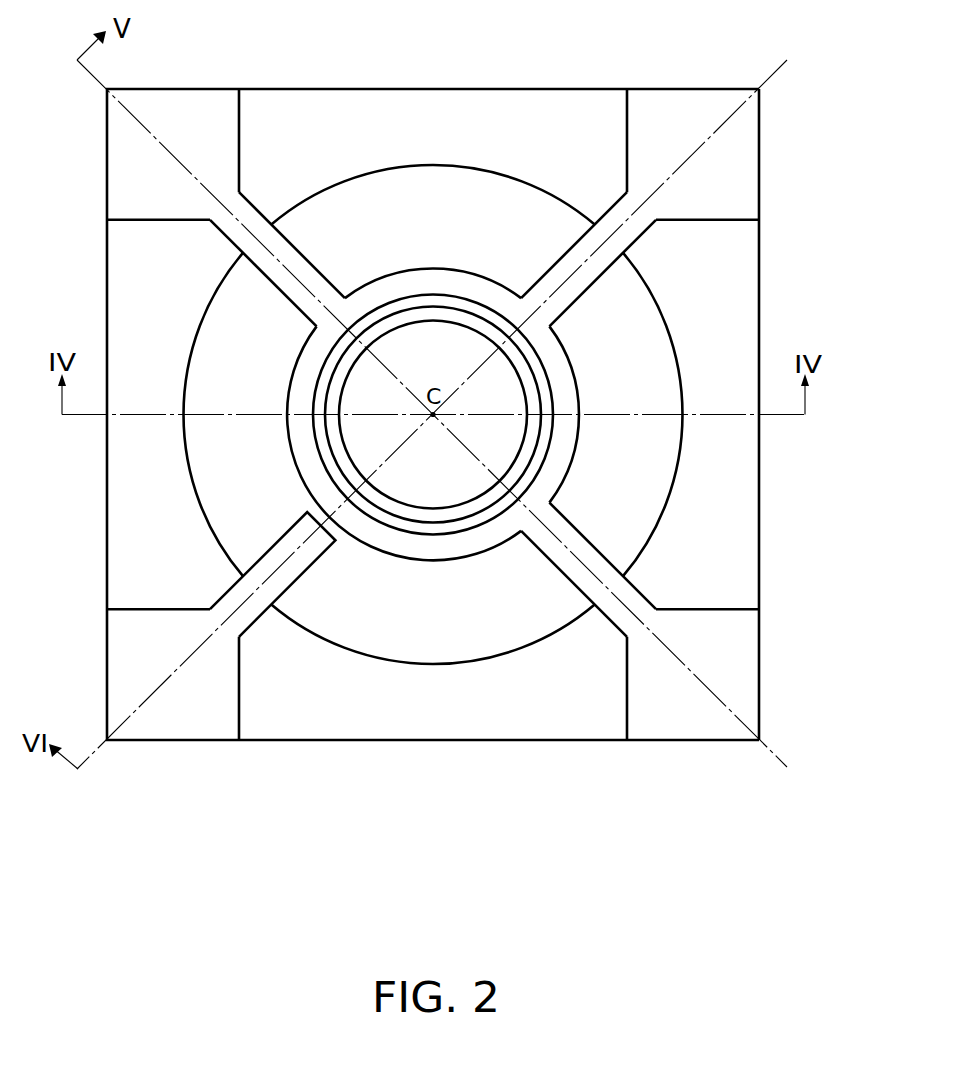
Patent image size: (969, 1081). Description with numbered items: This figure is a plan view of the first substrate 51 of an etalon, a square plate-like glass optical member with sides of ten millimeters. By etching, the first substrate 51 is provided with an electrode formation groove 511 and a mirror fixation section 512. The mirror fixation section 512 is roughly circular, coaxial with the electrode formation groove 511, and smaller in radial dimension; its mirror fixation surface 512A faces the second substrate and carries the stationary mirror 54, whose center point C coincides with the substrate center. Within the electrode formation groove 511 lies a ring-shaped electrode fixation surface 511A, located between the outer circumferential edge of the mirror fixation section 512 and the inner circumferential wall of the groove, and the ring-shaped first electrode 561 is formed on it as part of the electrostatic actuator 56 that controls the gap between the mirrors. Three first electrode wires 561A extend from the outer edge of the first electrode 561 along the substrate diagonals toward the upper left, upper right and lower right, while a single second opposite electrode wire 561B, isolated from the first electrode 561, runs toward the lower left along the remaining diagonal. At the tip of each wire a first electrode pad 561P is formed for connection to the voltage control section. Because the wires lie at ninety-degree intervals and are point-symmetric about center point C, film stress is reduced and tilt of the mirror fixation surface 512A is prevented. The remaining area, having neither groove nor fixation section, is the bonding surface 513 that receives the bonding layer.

The first substrate 51 is at (551, 89).
The electrode formation groove 511 is at (640, 300).
The electrode fixation surface 511A is at (455, 185).
The mirror fixation section 512 is at (540, 453).
The mirror fixation surface 512A is at (382, 332).
The bonding surface 513 is at (750, 296).
The stationary mirror 54 is at (432, 335).
The electrostatic actuator 56 is at (433, 417).
The first electrode 561 is at (563, 395).
The first electrode wires 561A is at (245, 213).
The second opposite electrode wire 561B is at (253, 612).
The first electrode pad 561P is at (195, 100).